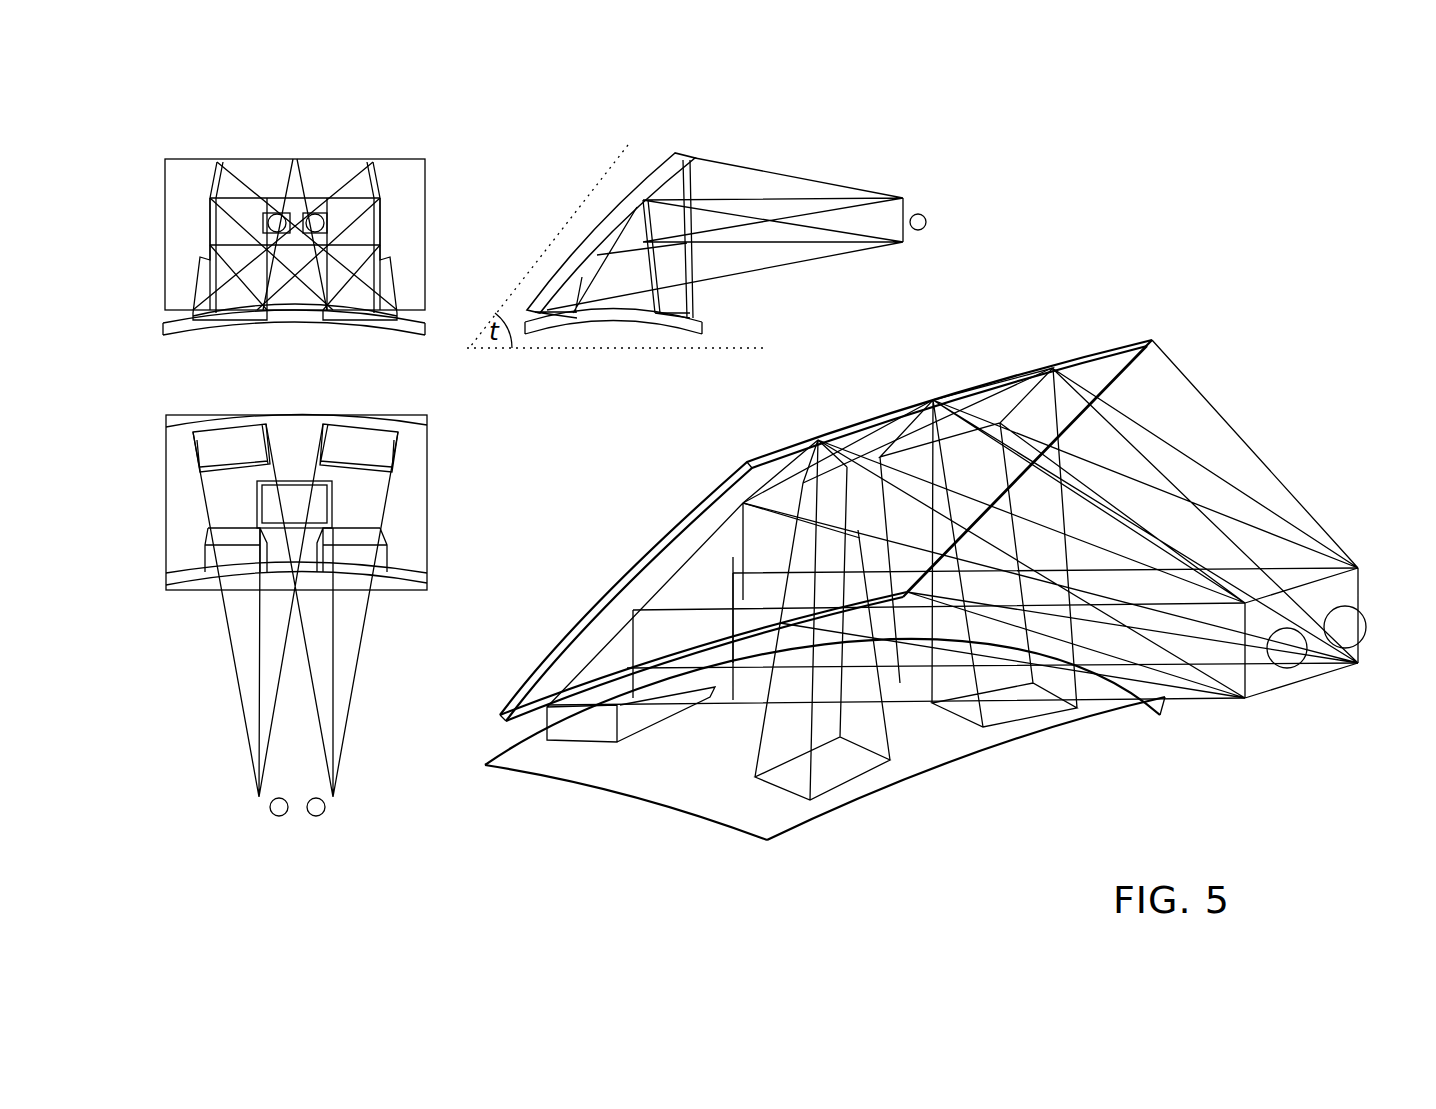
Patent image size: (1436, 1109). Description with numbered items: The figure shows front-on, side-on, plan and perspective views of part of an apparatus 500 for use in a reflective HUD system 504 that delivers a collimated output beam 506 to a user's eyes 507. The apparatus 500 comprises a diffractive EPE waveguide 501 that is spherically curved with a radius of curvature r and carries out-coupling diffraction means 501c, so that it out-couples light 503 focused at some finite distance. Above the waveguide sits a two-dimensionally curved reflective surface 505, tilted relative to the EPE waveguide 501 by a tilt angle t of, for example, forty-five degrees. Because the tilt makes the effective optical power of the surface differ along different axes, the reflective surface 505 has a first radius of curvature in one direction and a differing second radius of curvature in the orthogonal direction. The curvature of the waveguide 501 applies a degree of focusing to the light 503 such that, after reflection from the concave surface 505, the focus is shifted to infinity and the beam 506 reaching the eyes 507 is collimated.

The apparatus 500 is at (150, 333).
The diffractive EPE waveguide 501 is at (405, 330).
The out-coupling diffraction means 501c is at (938, 738).
The out-coupled light 503 is at (697, 297).
The reflective HUD system 504 is at (130, 200).
The 2D curved reflective surface 505 is at (410, 185).
The collimated output beam/image 506 is at (830, 178).
The user's eyes 507 is at (925, 215).